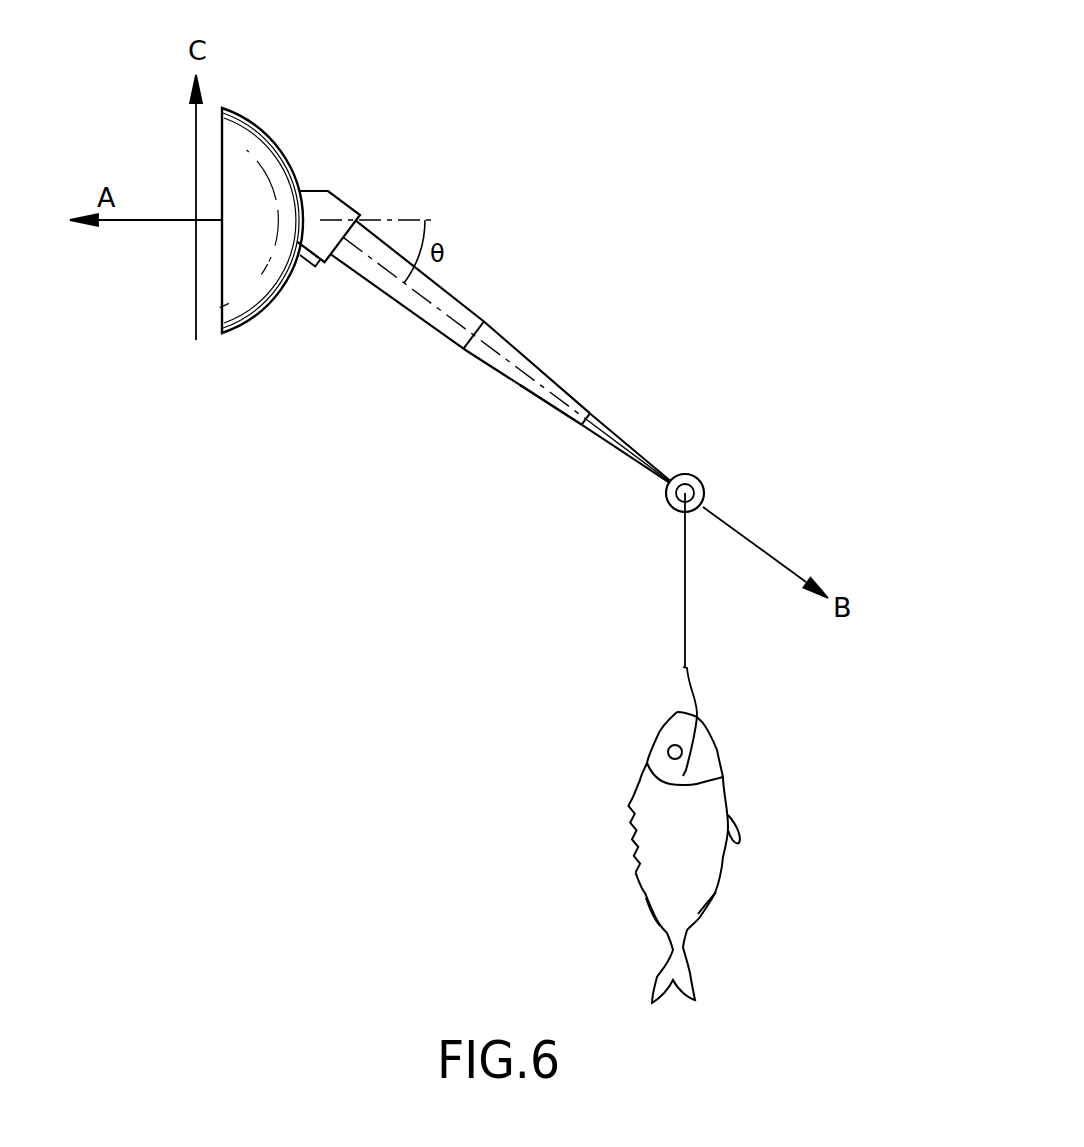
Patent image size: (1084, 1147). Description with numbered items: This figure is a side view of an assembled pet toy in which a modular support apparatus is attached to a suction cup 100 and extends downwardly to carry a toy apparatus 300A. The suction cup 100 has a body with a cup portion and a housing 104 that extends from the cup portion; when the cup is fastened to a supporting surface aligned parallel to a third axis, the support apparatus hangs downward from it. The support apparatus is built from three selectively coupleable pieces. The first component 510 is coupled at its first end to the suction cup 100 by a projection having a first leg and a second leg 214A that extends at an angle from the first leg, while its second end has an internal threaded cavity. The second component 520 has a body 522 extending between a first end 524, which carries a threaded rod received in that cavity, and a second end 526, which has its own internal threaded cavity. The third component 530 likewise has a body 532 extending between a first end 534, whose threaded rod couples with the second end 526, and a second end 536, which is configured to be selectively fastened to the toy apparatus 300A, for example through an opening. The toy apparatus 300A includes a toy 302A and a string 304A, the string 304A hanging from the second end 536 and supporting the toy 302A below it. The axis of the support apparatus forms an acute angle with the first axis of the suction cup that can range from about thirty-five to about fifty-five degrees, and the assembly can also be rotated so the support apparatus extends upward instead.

The suction cup 100 is at (274, 100).
The housing 104 is at (315, 189).
The second leg 214A is at (309, 266).
The first component 510 is at (528, 364).
The second component 520 is at (550, 346).
The body 522 is at (511, 386).
The first end 524 is at (481, 321).
The second end 526 is at (565, 421).
The third component 530 is at (657, 433).
The body 532 is at (613, 450).
The first end 534 is at (592, 413).
The second end 536 is at (668, 503).
The string 304A is at (685, 620).
The toy 302A is at (640, 782).
The toy apparatus 300A is at (815, 847).